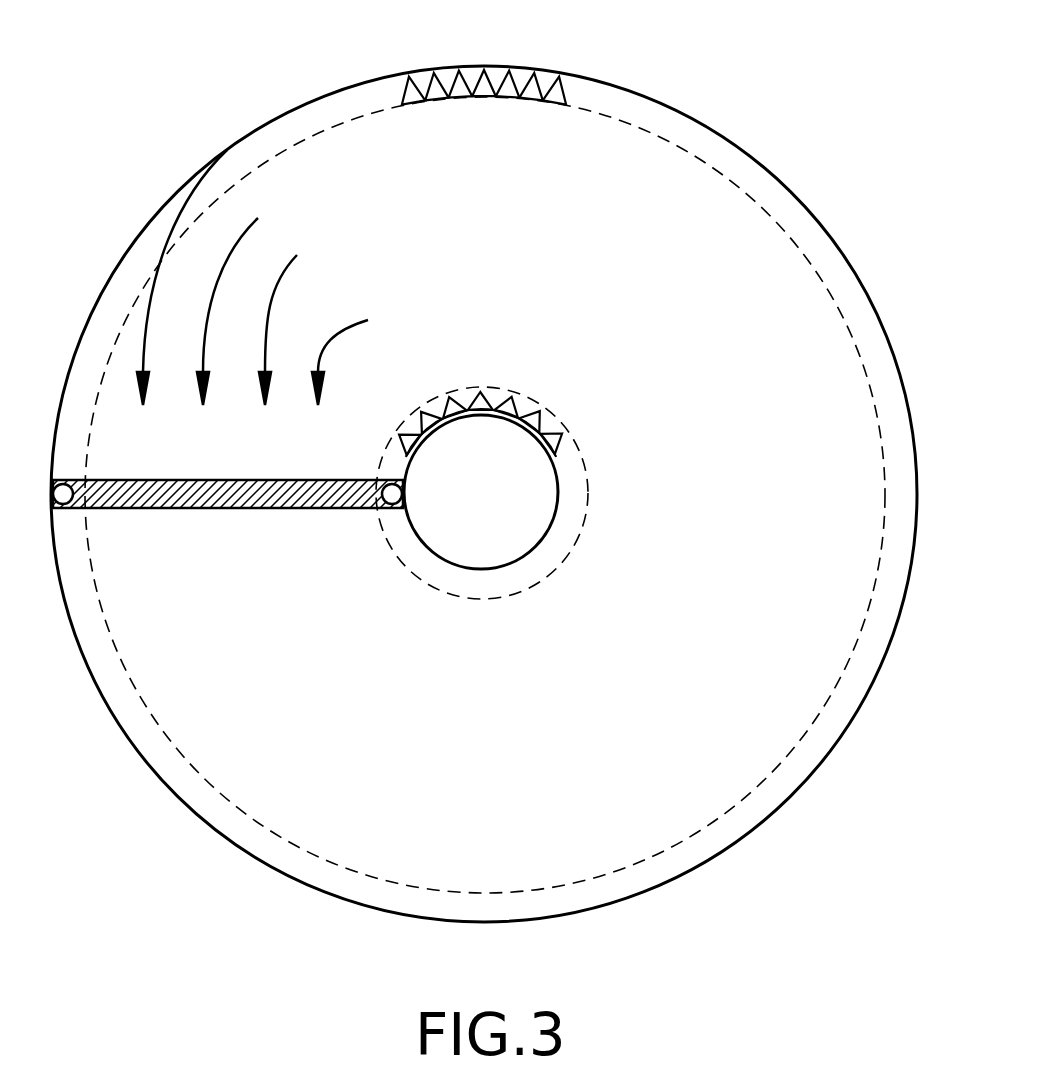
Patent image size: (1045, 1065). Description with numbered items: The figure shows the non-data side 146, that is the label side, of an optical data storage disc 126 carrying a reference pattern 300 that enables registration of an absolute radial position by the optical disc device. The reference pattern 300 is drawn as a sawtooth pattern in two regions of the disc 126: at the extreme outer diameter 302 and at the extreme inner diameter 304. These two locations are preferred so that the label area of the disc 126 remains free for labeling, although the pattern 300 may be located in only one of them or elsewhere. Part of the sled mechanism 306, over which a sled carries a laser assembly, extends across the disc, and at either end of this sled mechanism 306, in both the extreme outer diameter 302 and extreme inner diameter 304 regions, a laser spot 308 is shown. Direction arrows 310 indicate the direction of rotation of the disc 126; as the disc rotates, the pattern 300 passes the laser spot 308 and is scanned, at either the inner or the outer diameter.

The optical data storage disc 126 is at (786, 188).
The non-data side 146 is at (758, 335).
The reference pattern 300 is at (537, 82).
The extreme outer diameter 302 is at (686, 132).
The extreme inner diameter 304 is at (572, 495).
The sled mechanism 306 is at (197, 480).
The laser spot 308 is at (68, 482).
The direction arrows 310 is at (207, 255).